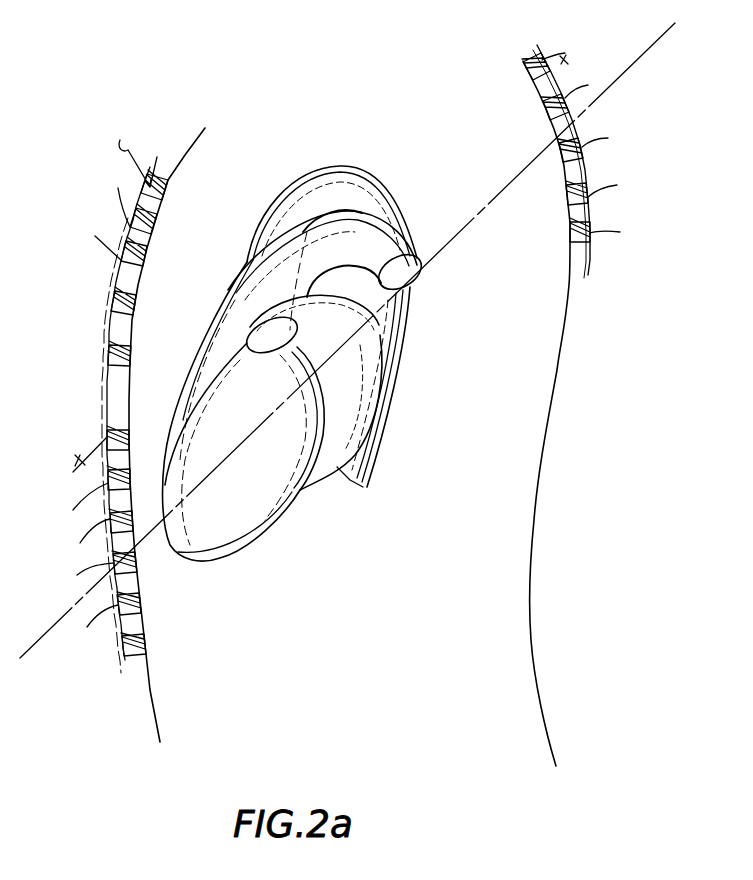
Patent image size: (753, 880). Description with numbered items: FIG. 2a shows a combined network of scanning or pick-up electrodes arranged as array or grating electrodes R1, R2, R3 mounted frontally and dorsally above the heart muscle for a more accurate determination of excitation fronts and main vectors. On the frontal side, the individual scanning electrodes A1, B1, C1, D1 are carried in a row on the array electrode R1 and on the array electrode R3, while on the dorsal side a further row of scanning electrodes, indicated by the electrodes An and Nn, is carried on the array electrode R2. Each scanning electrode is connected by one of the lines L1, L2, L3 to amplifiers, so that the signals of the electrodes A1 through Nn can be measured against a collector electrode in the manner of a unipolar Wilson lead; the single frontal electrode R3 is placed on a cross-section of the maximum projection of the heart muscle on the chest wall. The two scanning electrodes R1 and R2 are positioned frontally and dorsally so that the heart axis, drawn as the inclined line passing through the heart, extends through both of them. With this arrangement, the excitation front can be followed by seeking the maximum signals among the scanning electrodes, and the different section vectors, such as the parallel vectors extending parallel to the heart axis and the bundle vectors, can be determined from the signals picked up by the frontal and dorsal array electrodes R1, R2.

The scanning electrode A1 is at (140, 187).
The scanning electrode B1 is at (150, 231).
The scanning electrode C1 is at (140, 264).
The scanning electrode D1 is at (127, 305).
The line L1 is at (334, 322).
The line L2 is at (118, 204).
The line L3 is at (92, 238).
The array or grating electrode R1 is at (123, 647).
The array or grating electrode R2 is at (590, 220).
The array or grating electrode R3 is at (108, 352).
The scanning electrode An is at (530, 60).
The scanning electrode Nn is at (570, 237).